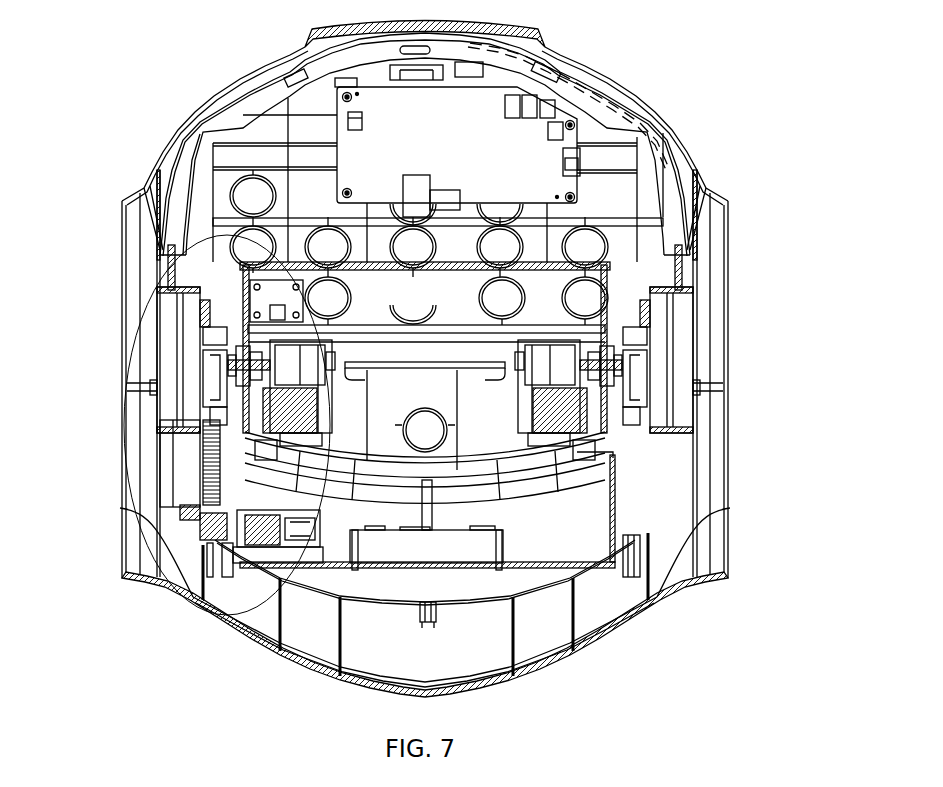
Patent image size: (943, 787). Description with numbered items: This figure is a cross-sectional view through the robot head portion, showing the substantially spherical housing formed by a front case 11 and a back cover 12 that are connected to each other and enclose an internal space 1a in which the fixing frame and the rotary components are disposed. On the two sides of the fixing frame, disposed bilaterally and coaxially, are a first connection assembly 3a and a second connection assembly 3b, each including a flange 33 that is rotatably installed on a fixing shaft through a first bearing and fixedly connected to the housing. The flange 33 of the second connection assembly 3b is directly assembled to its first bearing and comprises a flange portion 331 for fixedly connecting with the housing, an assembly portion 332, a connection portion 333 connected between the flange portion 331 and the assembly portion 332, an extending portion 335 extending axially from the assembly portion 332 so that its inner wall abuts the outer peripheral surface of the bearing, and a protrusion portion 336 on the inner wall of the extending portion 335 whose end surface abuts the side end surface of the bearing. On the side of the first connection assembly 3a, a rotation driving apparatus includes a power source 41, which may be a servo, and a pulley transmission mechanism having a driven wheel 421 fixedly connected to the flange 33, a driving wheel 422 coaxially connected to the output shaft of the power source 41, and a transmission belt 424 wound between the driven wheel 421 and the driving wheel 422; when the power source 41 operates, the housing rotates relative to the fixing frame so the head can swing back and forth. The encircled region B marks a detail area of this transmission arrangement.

The front case 11 is at (577, 85).
The back cover 12 is at (603, 610).
The internal space 1a is at (648, 468).
The first connection assembly 3a is at (145, 268).
The second connection assembly 3b is at (710, 345).
The detail region B is at (143, 305).
The flange 33 is at (732, 301).
The flange portion 331 is at (695, 218).
The assembly portion 332 is at (653, 303).
The connection portion 333 is at (680, 282).
The extending portion 335 is at (697, 291).
The protrusion portion 336 is at (710, 362).
The power source 41 is at (287, 530).
The driven wheel 421 is at (200, 310).
The driving wheel 422 is at (197, 537).
The transmission belt 424 is at (210, 458).